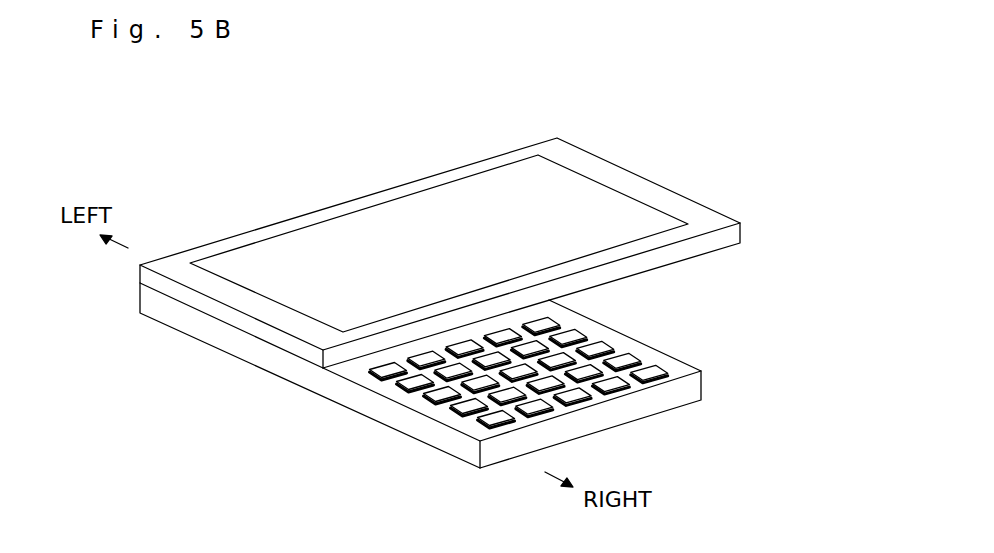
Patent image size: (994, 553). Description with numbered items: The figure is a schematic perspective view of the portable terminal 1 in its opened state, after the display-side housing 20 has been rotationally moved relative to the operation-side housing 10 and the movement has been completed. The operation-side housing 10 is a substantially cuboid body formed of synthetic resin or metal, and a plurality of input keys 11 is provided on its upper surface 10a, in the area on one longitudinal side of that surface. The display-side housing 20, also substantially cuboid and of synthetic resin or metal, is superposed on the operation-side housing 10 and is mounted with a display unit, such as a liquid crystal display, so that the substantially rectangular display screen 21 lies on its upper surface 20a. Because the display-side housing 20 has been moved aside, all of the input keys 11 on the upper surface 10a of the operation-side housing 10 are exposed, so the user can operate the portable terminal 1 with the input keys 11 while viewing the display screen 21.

The portable terminal 1 is at (263, 158).
The operation-side housing 10 is at (630, 418).
The upper surface of the operation-side housing 10a is at (680, 368).
The input keys 11 is at (467, 409).
The display-side housing 20 is at (740, 236).
The upper surface of the display-side housing 20a is at (577, 160).
The display screen 21 is at (418, 207).